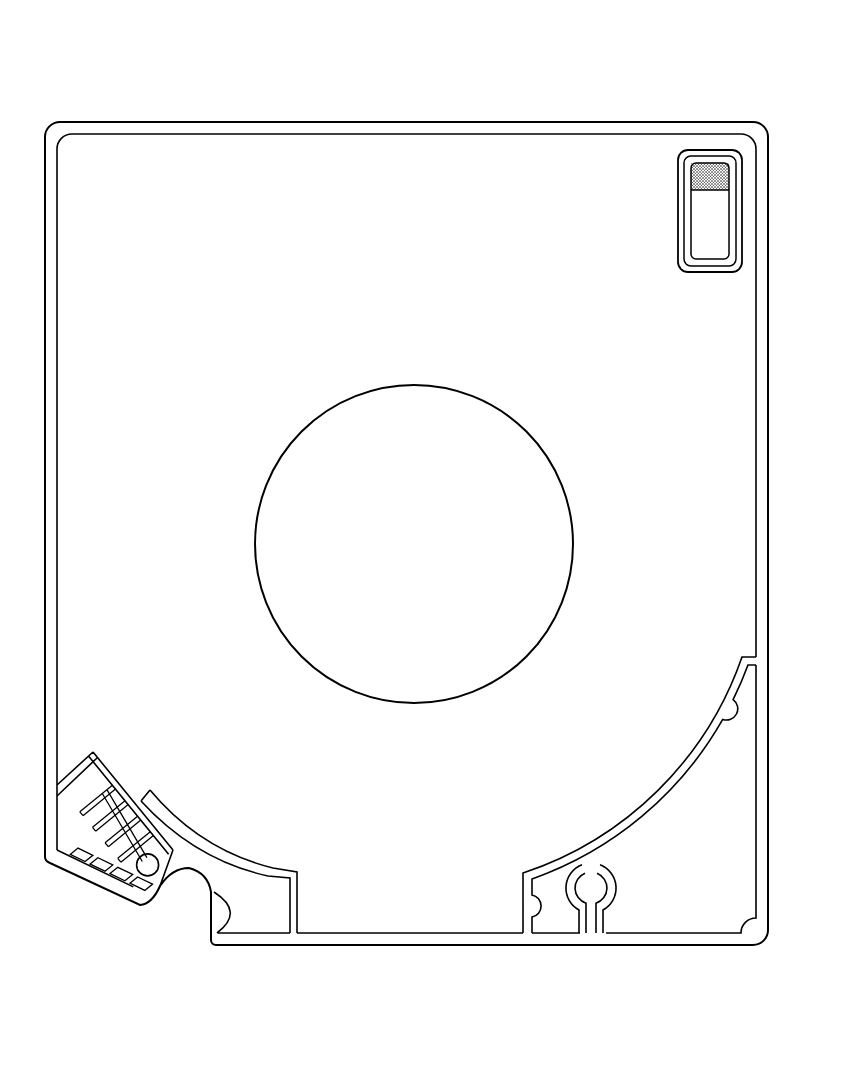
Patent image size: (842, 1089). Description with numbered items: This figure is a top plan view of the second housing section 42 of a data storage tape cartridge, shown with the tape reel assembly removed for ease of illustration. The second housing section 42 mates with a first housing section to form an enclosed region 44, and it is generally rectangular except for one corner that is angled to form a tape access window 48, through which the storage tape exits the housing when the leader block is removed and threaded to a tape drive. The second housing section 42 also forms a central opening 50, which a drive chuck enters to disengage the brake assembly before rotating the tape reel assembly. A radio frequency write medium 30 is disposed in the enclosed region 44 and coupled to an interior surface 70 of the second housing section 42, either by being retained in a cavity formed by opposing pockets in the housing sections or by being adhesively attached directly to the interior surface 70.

The second housing section 42 is at (163, 63).
The enclosed region 44 is at (256, 180).
The interior surface 70 is at (418, 173).
The radio frequency write medium 30 is at (668, 190).
The central opening 50 is at (257, 505).
The tape access window 48 is at (90, 910).